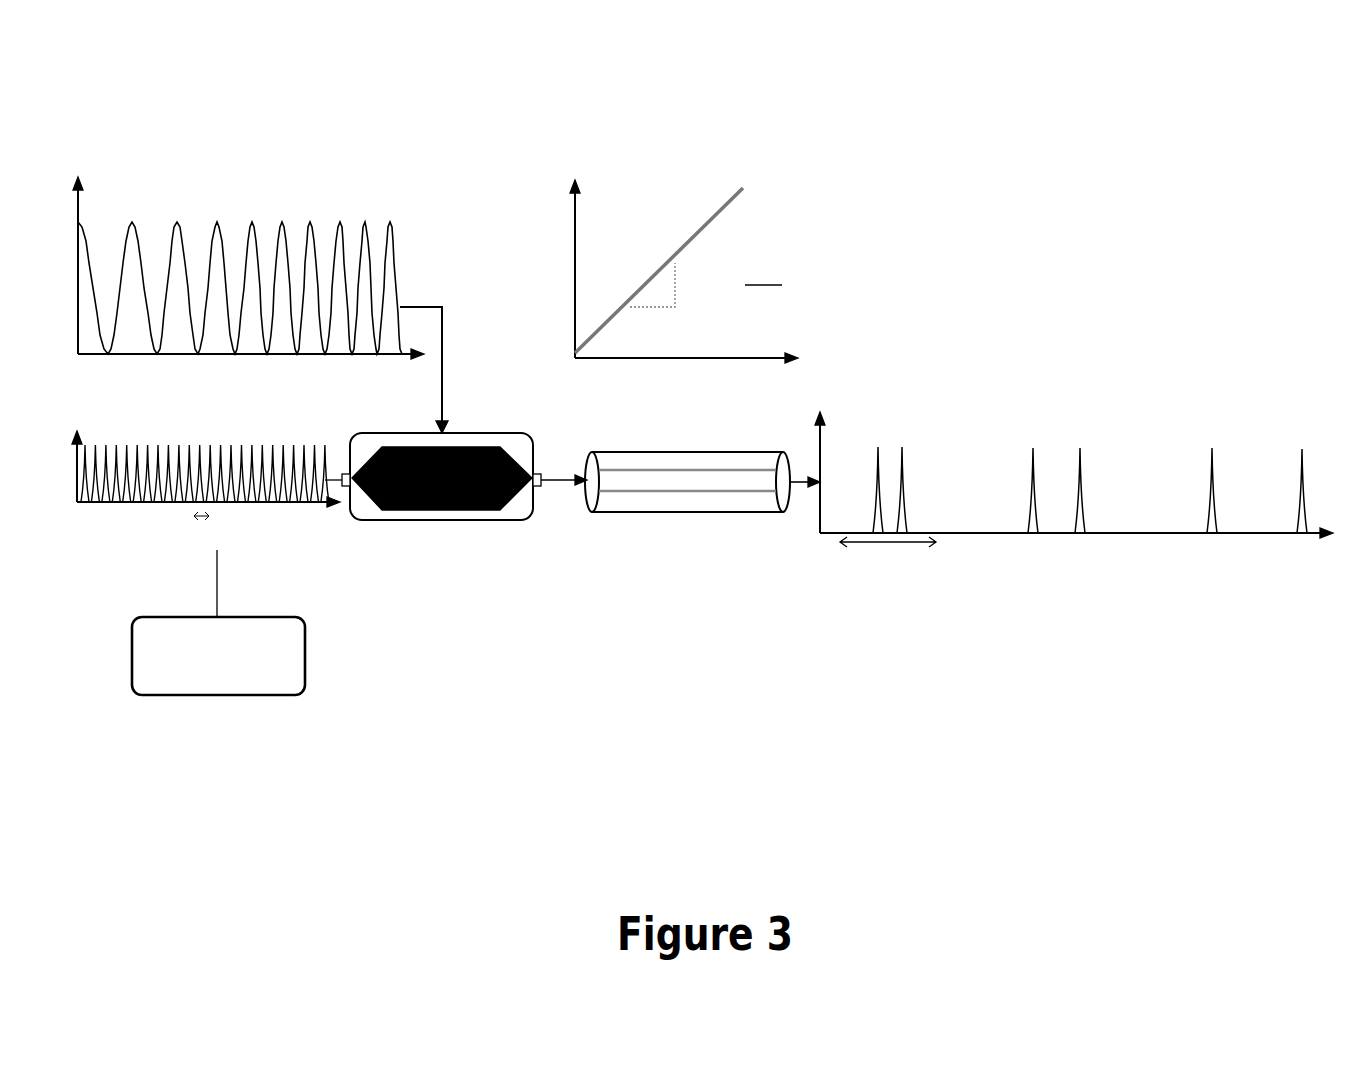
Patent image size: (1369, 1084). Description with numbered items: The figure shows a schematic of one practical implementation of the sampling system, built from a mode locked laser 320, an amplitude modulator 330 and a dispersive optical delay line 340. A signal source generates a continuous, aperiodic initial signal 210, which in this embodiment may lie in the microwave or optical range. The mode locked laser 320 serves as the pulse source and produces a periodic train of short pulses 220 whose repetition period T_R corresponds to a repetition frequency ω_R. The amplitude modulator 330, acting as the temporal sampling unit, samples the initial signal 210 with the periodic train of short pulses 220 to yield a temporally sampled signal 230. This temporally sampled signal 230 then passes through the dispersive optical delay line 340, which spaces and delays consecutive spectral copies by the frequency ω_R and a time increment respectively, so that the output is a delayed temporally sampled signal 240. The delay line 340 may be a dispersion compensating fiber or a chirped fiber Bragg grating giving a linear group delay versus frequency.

The initial signal 210 is at (224, 103).
The periodic train of short pulses 220 is at (355, 567).
The temporally sampled signal 230 is at (560, 516).
The delayed temporally sampled signal 240 is at (1146, 299).
The mode locked laser 320 is at (316, 698).
The amplitude modulator 330 is at (485, 542).
The dispersive optical delay line 340 is at (690, 586).